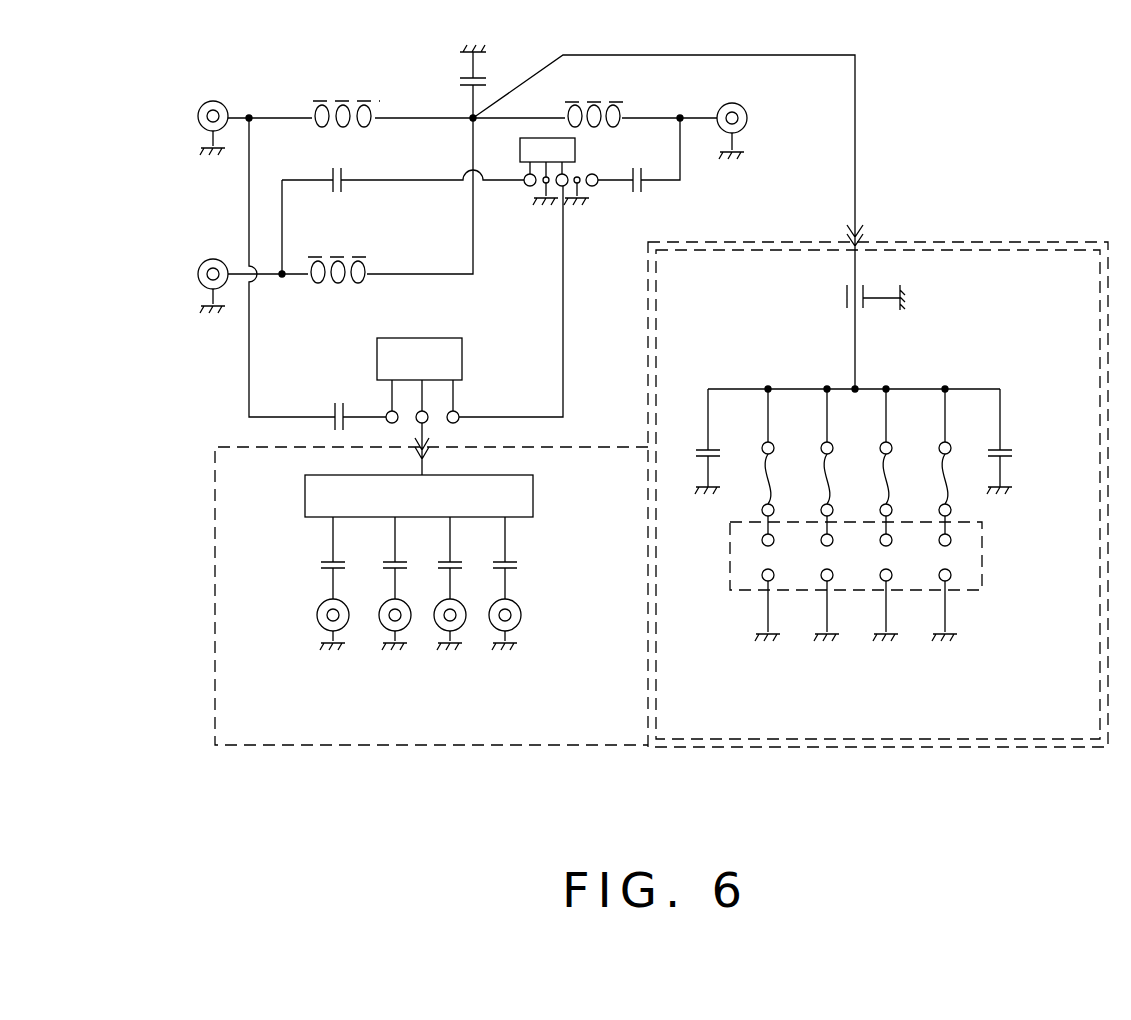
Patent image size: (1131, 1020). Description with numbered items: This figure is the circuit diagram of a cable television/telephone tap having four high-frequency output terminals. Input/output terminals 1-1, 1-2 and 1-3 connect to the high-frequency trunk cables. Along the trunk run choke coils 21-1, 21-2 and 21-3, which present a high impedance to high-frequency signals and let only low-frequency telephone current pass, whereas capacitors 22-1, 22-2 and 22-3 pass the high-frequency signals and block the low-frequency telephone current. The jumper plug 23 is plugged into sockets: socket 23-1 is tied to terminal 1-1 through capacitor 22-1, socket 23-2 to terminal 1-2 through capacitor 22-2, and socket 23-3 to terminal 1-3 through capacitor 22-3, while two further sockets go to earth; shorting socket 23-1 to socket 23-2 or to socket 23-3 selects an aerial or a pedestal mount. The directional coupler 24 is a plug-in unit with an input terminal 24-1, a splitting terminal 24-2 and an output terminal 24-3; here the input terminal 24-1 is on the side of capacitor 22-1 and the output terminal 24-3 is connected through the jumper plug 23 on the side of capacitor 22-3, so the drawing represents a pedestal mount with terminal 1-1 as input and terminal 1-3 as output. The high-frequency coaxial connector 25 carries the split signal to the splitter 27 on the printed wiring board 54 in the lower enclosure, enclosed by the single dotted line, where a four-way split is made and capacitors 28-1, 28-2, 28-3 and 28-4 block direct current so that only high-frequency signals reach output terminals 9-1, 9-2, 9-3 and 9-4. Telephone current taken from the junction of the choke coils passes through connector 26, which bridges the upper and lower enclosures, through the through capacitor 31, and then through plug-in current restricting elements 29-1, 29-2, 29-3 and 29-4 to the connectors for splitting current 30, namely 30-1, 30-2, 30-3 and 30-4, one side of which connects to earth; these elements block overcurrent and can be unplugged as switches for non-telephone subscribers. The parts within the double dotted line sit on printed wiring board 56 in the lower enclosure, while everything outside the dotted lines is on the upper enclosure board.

The input/output terminal 1-1 is at (179, 128).
The input/output terminal 1-2 is at (758, 131).
The input/output terminal 1-3 is at (179, 286).
The choke coil 21-1 is at (344, 91).
The choke coil 21-2 is at (597, 97).
The choke coil 21-3 is at (337, 251).
The capacitor 22-1 is at (320, 401).
The capacitor 22-2 is at (676, 194).
The capacitor 22-3 is at (376, 168).
The jumper plug 23 is at (529, 150).
The socket 23-1 is at (560, 190).
The socket 23-2 is at (597, 187).
The socket 23-3 is at (527, 188).
The directional coupler 24 is at (438, 359).
The directional coupler input terminal 24-1 is at (388, 398).
The directional coupler splitting terminal 24-2 is at (427, 400).
The directional coupler output terminal 24-3 is at (459, 398).
The high-frequency coaxial connector 25 is at (437, 442).
The connector 26 is at (870, 228).
The splitter 27 is at (419, 496).
The capacitor 28-1 is at (328, 555).
The capacitor 28-2 is at (380, 577).
The capacitor 28-3 is at (462, 557).
The capacitor 28-4 is at (520, 570).
The output terminal 9-1 is at (323, 630).
The output terminal 9-2 is at (385, 630).
The output terminal 9-3 is at (440, 630).
The output terminal 9-4 is at (492, 633).
The current restricting element 29-1 is at (757, 455).
The current restricting element 29-2 is at (812, 460).
The current restricting element 29-3 is at (872, 462).
The current restricting element 29-4 is at (950, 462).
The connector for splitting current 30 is at (982, 560).
The connector for splitting current 30-1 is at (760, 555).
The connector for splitting current 30-2 is at (820, 555).
The connector for splitting current 30-3 is at (878, 555).
The connector for splitting current 30-4 is at (937, 555).
The through capacitor 31 is at (873, 278).
The printed wiring board 54 is at (345, 732).
The printed wiring board 56 is at (1038, 727).